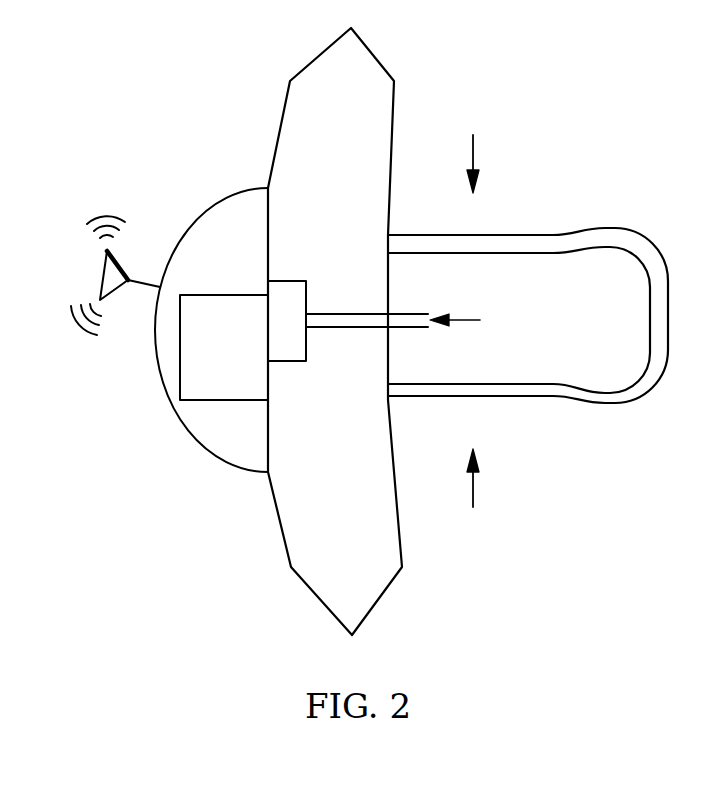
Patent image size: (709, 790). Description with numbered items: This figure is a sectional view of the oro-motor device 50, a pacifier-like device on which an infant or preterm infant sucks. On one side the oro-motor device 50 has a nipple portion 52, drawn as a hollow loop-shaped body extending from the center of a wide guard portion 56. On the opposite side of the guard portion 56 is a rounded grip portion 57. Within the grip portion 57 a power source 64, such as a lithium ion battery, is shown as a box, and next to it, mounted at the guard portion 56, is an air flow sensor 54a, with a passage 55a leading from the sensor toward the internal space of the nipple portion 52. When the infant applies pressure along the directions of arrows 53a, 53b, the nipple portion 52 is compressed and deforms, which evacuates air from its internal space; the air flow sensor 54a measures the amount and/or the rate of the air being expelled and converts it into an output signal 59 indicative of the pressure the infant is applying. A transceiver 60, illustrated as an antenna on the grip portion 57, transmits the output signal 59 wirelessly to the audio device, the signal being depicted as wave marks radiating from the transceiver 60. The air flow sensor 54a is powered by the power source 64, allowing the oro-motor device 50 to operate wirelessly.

The oro-motor device 50 is at (153, 99).
The nipple portion 52 is at (625, 405).
The pressure arrow 53a is at (473, 485).
The pressure arrow 53b is at (473, 152).
The air flow sensor 54a is at (292, 362).
The insertion rod 55a is at (463, 323).
The guard portion 56 is at (365, 590).
The grip portion 57 is at (223, 220).
The output signal 59 is at (102, 213).
The transceiver 60 is at (100, 280).
The power source 64 is at (190, 357).